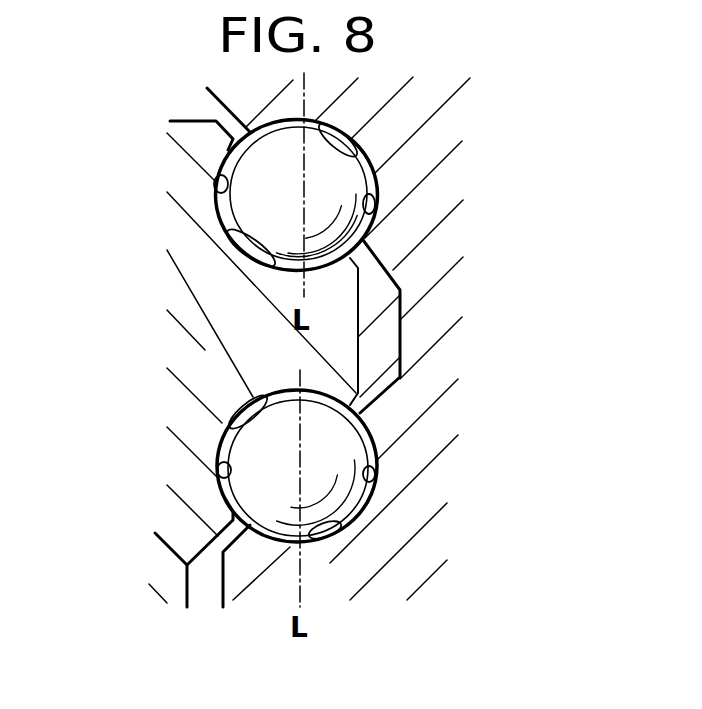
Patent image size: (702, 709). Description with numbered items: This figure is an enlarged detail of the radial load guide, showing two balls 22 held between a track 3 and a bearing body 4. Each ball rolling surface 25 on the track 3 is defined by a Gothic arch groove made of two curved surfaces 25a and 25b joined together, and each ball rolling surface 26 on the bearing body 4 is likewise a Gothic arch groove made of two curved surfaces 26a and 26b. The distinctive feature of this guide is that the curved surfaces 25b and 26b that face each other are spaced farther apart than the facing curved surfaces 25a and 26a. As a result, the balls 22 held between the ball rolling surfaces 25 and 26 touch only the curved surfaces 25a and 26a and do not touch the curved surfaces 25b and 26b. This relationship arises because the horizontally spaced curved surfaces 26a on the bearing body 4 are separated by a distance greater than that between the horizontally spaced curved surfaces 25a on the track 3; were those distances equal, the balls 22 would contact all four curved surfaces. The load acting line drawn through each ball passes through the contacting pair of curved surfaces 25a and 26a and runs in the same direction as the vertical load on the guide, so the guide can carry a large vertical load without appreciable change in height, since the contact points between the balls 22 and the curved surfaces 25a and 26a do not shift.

The track 3 is at (208, 338).
The bearing body 4 is at (447, 300).
The balls 22 is at (232, 153).
The ball rolling surface 25 is at (80, 192).
The curved surface 25a is at (247, 242).
The curved surface 25b is at (218, 193).
The ball rolling surface 26 is at (562, 135).
The curved surface 26a is at (370, 152).
The curved surface 26b is at (375, 190).